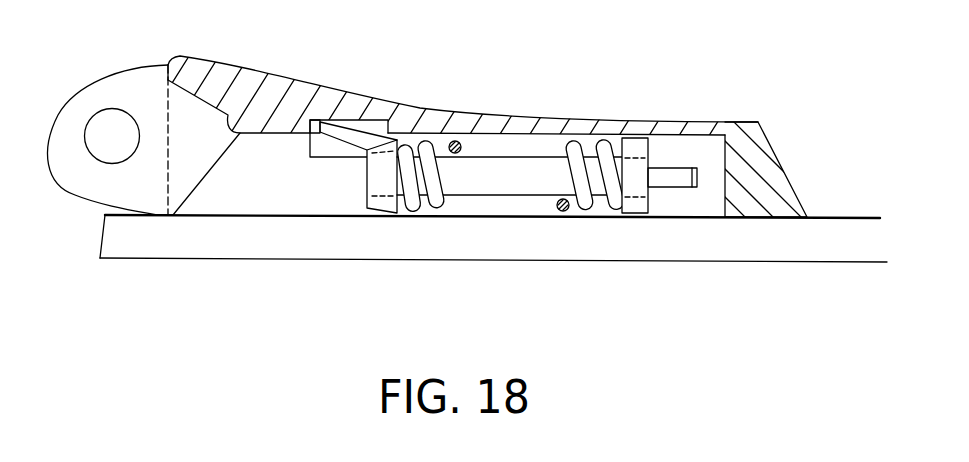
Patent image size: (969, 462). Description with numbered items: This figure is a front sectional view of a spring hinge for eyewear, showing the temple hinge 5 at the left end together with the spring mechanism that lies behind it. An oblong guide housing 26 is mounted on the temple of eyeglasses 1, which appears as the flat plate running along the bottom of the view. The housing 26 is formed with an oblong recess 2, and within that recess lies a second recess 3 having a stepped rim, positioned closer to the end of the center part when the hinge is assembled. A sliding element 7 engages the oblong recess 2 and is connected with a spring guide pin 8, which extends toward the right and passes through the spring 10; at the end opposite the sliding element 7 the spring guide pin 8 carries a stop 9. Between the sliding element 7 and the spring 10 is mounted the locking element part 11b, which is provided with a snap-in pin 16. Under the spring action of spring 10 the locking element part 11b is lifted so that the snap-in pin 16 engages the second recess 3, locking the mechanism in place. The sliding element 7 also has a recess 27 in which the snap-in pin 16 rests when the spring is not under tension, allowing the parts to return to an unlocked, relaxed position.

The temple of eyeglasses 1 is at (852, 245).
The oblong recess 2 is at (479, 145).
The second recess 3 is at (372, 121).
The temple hinge 5 is at (70, 155).
The sliding element 7 is at (227, 197).
The spring guide pin 8 is at (517, 180).
The stop 9 is at (630, 213).
The spring 10 is at (582, 148).
The locking element part 11b is at (388, 180).
The snap-in pin 16 is at (354, 148).
The oblong guide housing 26 is at (743, 175).
The recess 27 is at (319, 148).